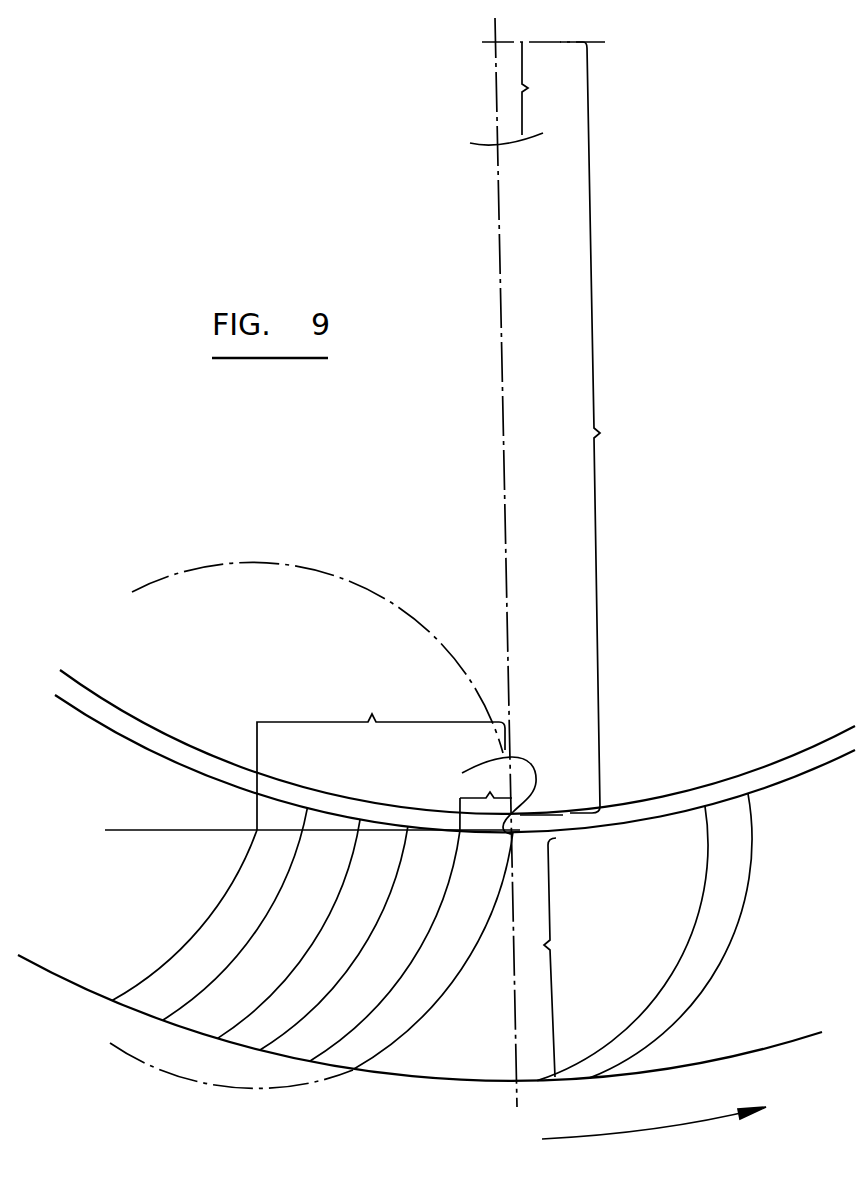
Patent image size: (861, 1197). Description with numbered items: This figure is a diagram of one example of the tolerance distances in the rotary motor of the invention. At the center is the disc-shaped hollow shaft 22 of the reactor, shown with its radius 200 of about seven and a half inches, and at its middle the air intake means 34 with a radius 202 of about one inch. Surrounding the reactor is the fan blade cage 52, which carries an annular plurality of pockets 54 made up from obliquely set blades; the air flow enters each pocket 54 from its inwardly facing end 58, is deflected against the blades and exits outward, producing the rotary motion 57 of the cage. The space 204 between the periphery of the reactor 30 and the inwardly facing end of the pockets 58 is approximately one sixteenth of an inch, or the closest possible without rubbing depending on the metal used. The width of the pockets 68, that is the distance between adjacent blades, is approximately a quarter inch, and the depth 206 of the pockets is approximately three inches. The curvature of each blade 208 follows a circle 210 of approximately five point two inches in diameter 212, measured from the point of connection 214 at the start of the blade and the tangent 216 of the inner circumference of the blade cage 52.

The hollow shaft 22 is at (737, 297).
The periphery of the reactor 30 is at (640, 803).
The air intake means 34 is at (484, 48).
The fan blade cage 52 is at (810, 850).
The pocket 54 is at (240, 912).
The rotary motion 57 is at (618, 1136).
The inwardly facing end of the pocket 58 is at (730, 805).
The width of the pockets 68 is at (411, 921).
The radius of the hollow shaft 200 is at (604, 427).
The radius of the air intake means 202 is at (545, 88).
The space between the reactor periphery and the pocket ends 204 is at (755, 768).
The depth of the pockets 206 is at (575, 957).
The curvature of each blade 208 is at (366, 960).
The circle 210 is at (290, 563).
The diameter of the circle 212 is at (381, 758).
The point of connection 214 is at (483, 795).
The tangent of the inner circumference of the blade cage 216 is at (172, 830).